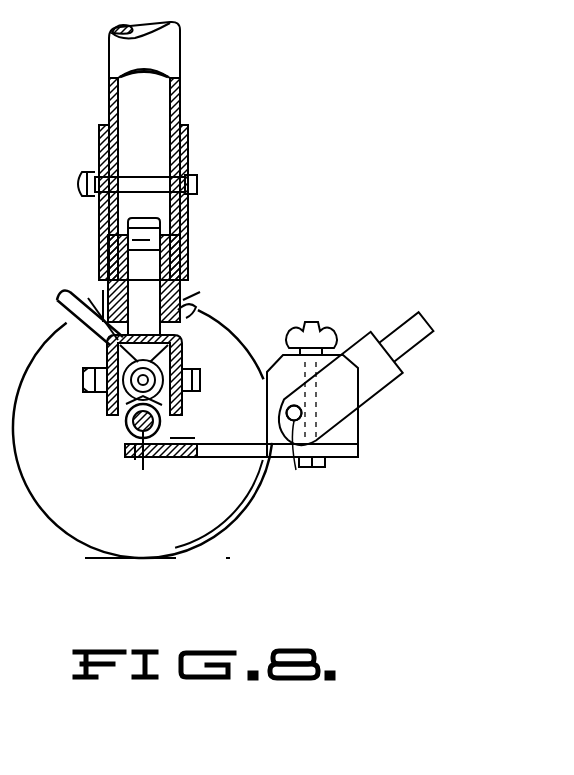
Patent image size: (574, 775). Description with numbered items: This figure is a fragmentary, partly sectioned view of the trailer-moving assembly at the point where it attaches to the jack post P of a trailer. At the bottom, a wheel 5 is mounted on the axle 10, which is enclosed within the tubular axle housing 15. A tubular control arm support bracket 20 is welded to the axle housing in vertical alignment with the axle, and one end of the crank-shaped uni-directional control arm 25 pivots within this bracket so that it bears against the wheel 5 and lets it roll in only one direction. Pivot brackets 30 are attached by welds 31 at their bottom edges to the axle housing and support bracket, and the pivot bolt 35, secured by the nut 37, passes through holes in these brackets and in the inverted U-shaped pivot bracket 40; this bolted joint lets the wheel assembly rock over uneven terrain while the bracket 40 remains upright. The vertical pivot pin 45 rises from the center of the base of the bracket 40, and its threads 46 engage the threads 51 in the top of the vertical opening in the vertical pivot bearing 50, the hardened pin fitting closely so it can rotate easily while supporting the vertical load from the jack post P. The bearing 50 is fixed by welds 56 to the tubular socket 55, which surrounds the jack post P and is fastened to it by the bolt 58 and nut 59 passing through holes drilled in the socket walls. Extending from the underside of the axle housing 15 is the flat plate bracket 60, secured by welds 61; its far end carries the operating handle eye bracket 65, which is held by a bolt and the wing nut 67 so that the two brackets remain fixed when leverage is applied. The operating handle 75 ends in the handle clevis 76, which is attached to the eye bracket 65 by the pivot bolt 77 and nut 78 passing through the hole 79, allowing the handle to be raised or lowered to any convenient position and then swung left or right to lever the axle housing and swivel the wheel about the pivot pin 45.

The jack post P is at (181, 46).
The wheel 5 is at (248, 527).
The axle 10 is at (143, 460).
The tubular axle housing 15 is at (138, 460).
The control arm support bracket 20 is at (183, 352).
The uni-directional control arm 25 is at (68, 296).
The pivot bracket 30 is at (195, 412).
The weld 31 is at (128, 430).
The pivot bolt 35 is at (206, 378).
The nut 37 is at (90, 388).
The inverted U-shaped pivot bracket 40 is at (190, 316).
The vertical pivot pin 45 is at (187, 303).
The threads 46 is at (178, 242).
The vertical pivot bearing 50 is at (181, 272).
The threads 51 is at (190, 232).
The tubular socket 55 is at (189, 130).
The weld 56 is at (104, 290).
The bolt 58 is at (195, 177).
The nut 59 is at (93, 175).
The bracket 60 is at (232, 458).
The weld 61 is at (176, 440).
The operating handle eye bracket 65 is at (359, 430).
The wing nut 67 is at (328, 333).
The operating handle 75 is at (412, 327).
The handle clevis 76 is at (395, 378).
The pivot bolt 77 is at (296, 470).
The nut 78 is at (298, 470).
The hole 79 is at (300, 472).